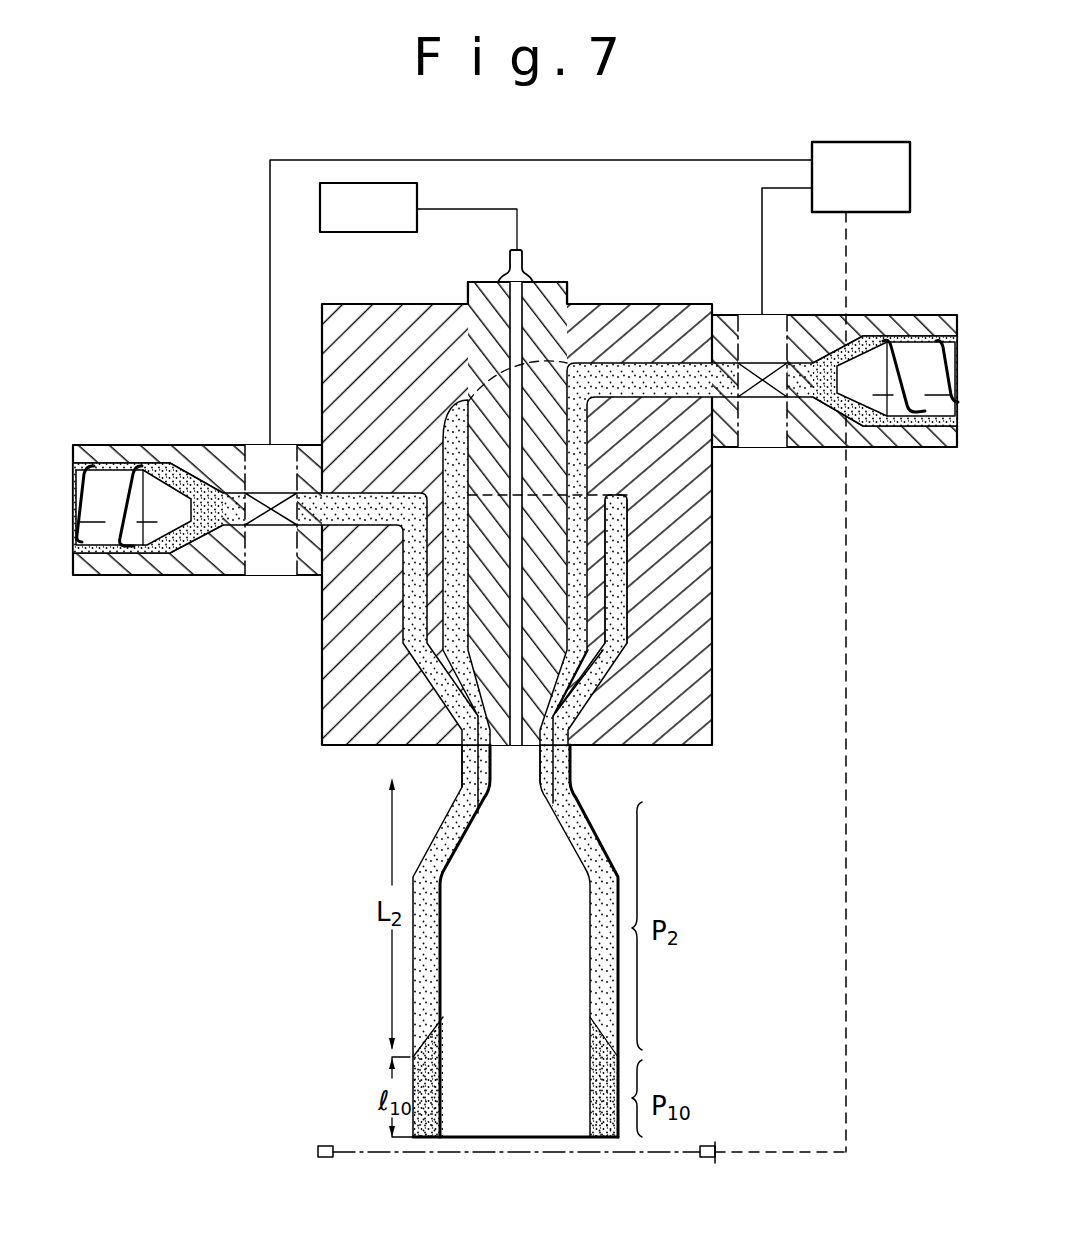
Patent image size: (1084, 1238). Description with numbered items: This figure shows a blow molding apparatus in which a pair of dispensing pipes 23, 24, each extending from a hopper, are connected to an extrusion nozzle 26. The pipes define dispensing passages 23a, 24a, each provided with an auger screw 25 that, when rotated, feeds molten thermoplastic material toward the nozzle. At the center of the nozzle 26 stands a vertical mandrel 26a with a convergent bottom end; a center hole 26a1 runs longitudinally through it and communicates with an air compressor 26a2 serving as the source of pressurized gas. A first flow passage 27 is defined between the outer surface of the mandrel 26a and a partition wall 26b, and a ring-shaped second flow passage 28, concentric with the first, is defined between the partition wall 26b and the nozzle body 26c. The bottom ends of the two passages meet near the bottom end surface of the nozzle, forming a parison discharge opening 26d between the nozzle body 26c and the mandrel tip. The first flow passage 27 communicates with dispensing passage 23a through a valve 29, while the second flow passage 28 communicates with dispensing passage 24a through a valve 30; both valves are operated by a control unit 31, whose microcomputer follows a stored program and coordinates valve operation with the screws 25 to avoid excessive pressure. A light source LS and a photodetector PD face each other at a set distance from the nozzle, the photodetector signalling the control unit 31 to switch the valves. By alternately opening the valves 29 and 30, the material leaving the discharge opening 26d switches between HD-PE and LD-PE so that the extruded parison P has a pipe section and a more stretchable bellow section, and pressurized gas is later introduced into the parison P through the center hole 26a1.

The dispensing pipe 23 is at (882, 452).
The dispensing passage 23a is at (807, 385).
The dispensing pipe 24 is at (160, 580).
The dispensing passage 24a is at (178, 470).
The auger screw 25 is at (110, 470).
The extrusion nozzle 26 is at (716, 748).
The mandrel 26a is at (479, 299).
The center hole 26a1 is at (523, 322).
The air compressor 26a2 is at (417, 200).
The partition wall 26b is at (593, 592).
The nozzle body 26c is at (325, 640).
The parison discharge opening 26d is at (478, 768).
The first flow passage 27 is at (580, 437).
The second flow passage 28 is at (622, 630).
The valve 29 is at (748, 315).
The valve 30 is at (258, 450).
The control unit 31 is at (882, 142).
The light source LS is at (318, 1152).
The photodetector PD is at (715, 1157).
The parison P is at (574, 1159).